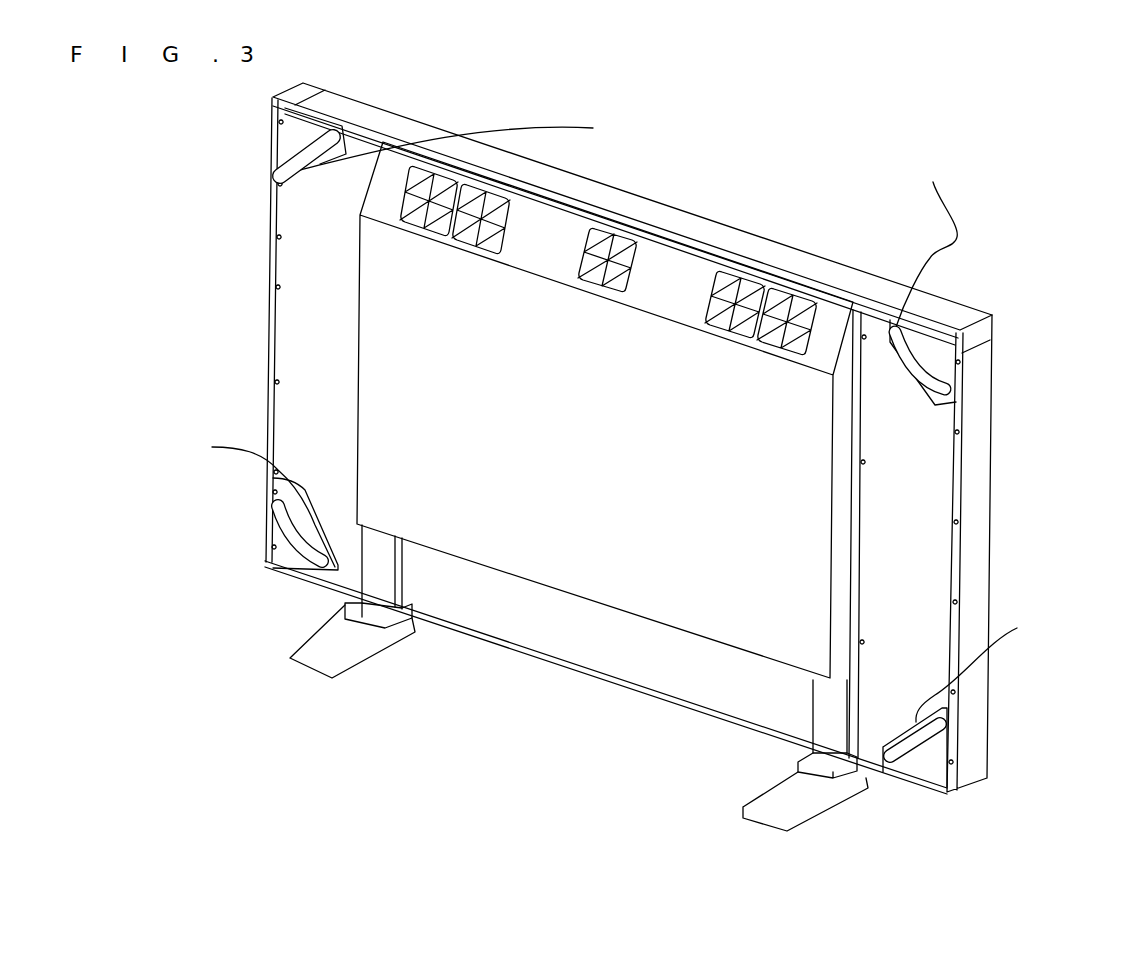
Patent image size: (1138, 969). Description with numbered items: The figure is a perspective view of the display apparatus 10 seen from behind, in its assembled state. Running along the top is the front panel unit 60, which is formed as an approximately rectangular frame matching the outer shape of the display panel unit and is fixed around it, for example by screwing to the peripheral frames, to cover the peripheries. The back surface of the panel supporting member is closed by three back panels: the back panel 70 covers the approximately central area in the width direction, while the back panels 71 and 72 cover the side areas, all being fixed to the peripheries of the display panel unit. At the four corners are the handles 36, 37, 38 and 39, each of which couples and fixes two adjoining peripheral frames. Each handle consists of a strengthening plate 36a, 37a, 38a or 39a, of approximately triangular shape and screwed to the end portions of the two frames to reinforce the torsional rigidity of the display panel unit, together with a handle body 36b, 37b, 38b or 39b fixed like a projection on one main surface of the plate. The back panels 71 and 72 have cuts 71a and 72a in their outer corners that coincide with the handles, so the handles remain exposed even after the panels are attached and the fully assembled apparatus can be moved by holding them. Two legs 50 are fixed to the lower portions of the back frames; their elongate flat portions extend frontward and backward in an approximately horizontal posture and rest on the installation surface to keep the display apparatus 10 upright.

The display apparatus 10 is at (868, 138).
The handle 36 is at (172, 112).
The strengthening plate 36a is at (297, 133).
The handle body 36b is at (288, 162).
The handle 37 is at (1078, 335).
The strengthening plate 37a is at (948, 362).
The handle body 37b is at (917, 365).
The handle 38 is at (938, 844).
The strengthening plate 38a is at (933, 768).
The handle body 38b is at (905, 757).
The handle 39 is at (290, 652).
The strengthening plate 39a is at (310, 550).
The handle body 39b is at (265, 563).
The leg 50 is at (352, 647).
The front panel unit 60 is at (700, 223).
The back panel 70 is at (610, 587).
The back panel 71 is at (300, 352).
The cut 71a is at (414, 341).
The back panel 72 is at (920, 493).
The cut 72a is at (982, 437).